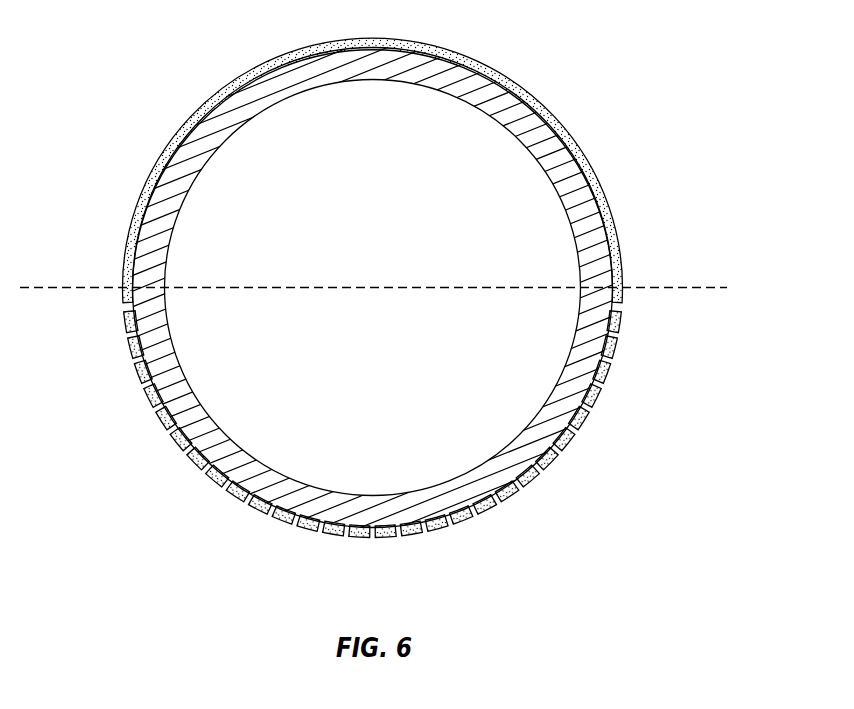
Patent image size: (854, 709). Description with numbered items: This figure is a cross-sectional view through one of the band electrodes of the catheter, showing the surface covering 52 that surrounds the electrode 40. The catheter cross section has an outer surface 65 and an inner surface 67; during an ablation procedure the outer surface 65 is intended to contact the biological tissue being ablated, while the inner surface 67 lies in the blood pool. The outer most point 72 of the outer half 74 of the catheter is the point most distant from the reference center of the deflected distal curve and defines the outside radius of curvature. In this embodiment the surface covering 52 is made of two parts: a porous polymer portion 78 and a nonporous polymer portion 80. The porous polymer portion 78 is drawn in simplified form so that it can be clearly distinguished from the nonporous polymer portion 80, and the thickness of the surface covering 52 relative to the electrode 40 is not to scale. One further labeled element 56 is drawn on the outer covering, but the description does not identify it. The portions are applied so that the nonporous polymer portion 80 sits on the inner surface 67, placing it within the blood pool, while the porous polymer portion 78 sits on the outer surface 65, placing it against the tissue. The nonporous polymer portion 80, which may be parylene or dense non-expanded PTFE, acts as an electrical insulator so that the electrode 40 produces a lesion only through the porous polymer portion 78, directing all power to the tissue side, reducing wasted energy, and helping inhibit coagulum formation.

The electrode 40 is at (373, 309).
The surface covering 52 is at (375, 309).
The electrode segment 56 is at (205, 468).
The outer surface 65 is at (497, 500).
The inner surface 67 is at (428, 57).
The outer most point 72 is at (383, 535).
The outer half 74 is at (378, 448).
The porous polymer portion 78 is at (620, 322).
The nonporous polymer portion 80 is at (587, 162).